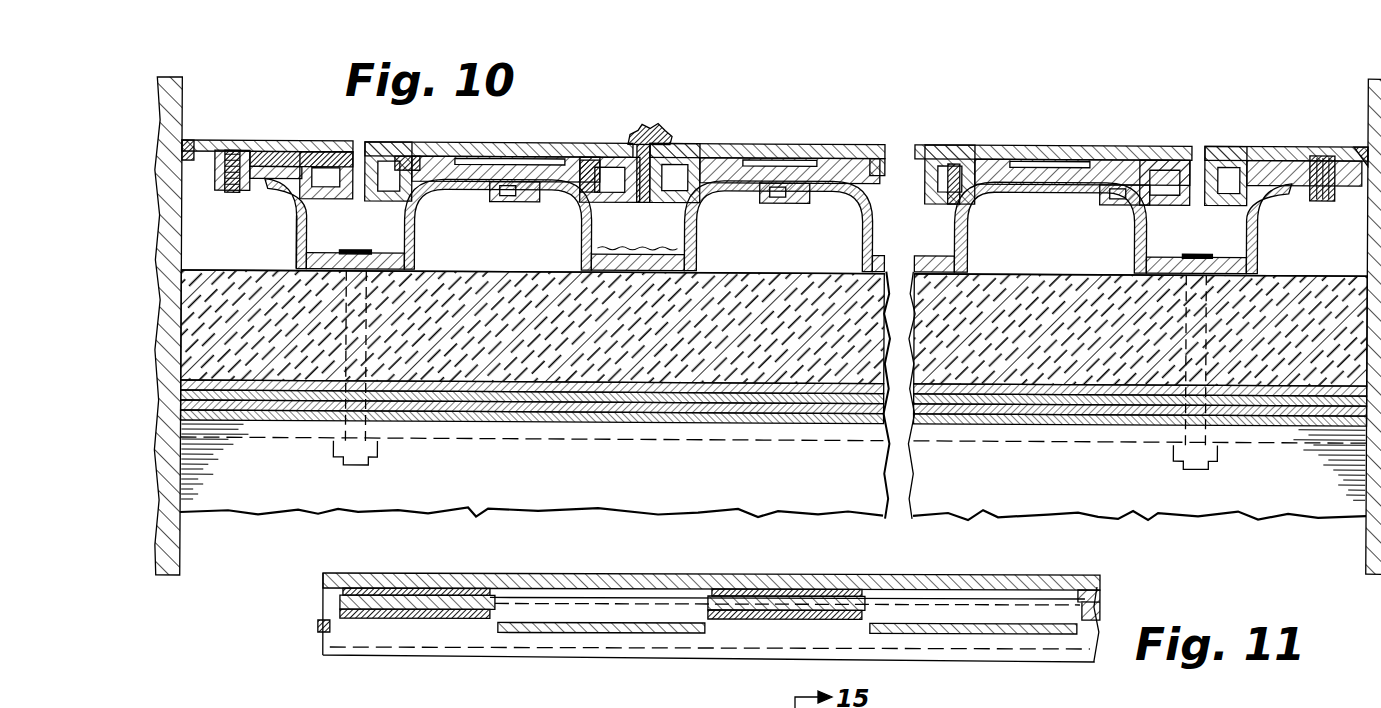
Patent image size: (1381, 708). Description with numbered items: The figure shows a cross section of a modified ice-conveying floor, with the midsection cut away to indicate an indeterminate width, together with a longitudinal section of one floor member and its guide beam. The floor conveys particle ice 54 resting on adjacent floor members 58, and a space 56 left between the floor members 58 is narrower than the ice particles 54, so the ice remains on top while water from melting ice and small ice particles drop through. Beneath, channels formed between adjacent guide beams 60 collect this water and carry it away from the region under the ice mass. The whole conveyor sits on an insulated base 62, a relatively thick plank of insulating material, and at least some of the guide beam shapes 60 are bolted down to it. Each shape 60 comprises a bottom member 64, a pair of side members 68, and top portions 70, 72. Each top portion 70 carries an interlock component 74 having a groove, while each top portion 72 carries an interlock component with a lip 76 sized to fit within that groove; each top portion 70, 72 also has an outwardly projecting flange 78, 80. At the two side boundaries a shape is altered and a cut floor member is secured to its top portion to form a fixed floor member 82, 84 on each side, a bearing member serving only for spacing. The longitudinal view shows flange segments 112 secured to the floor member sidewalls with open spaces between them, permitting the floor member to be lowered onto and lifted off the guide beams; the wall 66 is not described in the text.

In FIG. 10, the particle ice 54 is at (650, 126).
In FIG. 10, the space 56 is at (357, 142).
In FIG. 10, the floor member 58 is at (513, 142).
In FIG. 11, the floor member 58 is at (838, 573).
In FIG. 10, the guide beam 60 is at (425, 240).
In FIG. 10, the insulated base 62 is at (682, 355).
In FIG. 10, the bottom member 64 is at (320, 255).
In FIG. 10, the boot wall 66 is at (297, 215).
In FIG. 10, the side member 68 is at (417, 200).
In FIG. 10, the top portion 70 is at (303, 152).
In FIG. 10, the top portion 72 is at (462, 160).
In FIG. 10, the interlock component 74 is at (520, 198).
In FIG. 10, the lip 76 is at (498, 198).
In FIG. 10, the outwardly projecting flange 78 is at (322, 160).
In FIG. 10, the outwardly projecting flange 80 is at (405, 160).
In FIG. 10, the fixed floor member 82 is at (262, 148).
In FIG. 10, the fixed floor member 84 is at (1268, 142).
In FIG. 11, the flange segment 112 is at (548, 633).